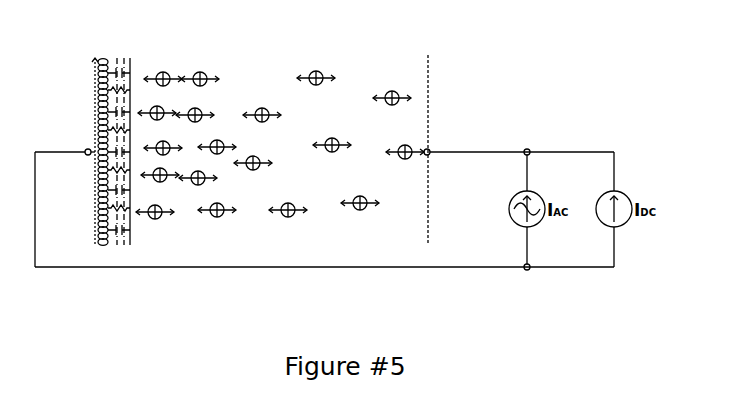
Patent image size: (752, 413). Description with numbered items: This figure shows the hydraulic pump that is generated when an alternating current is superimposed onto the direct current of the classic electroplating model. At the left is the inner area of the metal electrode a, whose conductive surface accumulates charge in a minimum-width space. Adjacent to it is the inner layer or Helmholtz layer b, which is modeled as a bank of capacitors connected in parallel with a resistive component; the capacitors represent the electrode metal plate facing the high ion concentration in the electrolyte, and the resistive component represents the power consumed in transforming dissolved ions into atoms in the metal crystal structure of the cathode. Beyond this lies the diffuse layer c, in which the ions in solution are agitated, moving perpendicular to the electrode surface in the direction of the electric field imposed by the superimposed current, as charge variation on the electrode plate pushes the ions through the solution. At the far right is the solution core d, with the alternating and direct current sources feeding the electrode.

The inner area of the metal electrode a is at (93, 177).
The inner layer or Helmholtz layer b is at (119, 177).
The diffuse layer c is at (280, 184).
The solution core d is at (441, 176).